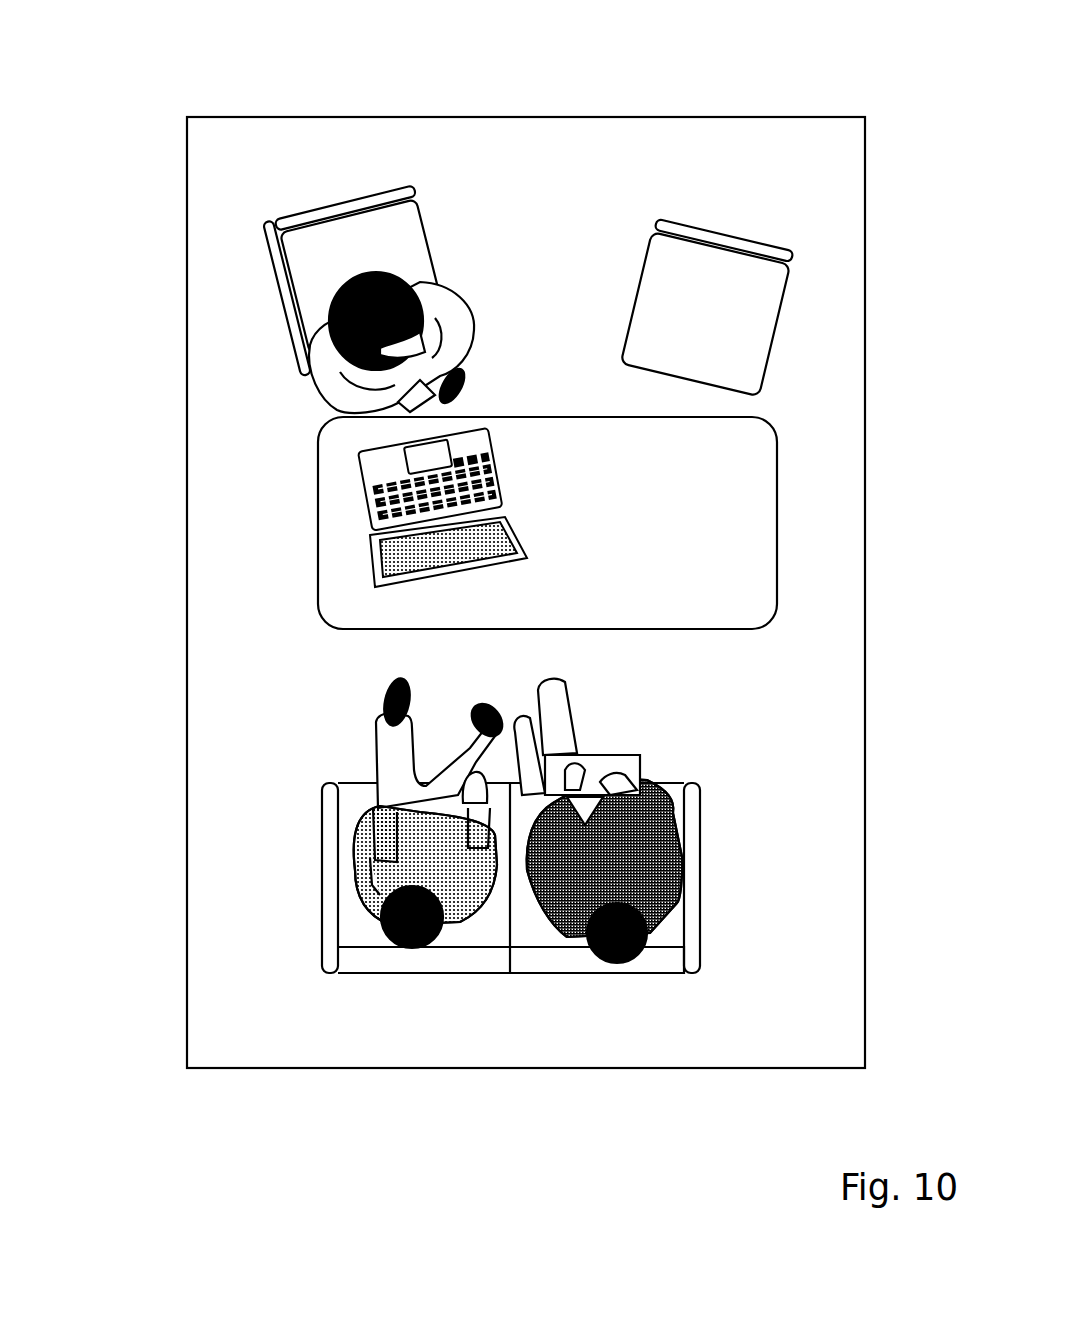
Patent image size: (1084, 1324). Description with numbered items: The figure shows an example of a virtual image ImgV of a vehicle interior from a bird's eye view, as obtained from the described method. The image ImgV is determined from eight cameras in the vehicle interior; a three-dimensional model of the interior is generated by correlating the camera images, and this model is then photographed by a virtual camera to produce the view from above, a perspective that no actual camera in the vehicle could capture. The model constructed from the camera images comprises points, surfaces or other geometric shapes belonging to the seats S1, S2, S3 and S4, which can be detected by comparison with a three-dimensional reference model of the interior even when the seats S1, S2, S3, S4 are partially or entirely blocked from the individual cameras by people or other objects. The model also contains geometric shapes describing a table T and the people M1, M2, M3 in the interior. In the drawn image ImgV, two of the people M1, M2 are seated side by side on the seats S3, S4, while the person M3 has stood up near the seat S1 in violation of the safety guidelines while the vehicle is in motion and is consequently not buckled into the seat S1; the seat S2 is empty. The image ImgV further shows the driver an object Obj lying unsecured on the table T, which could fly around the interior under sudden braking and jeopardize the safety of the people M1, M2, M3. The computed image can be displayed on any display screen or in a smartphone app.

The virtual image ImgV is at (505, 117).
The seat S1 is at (345, 198).
The seat S2 is at (733, 220).
The seat S3 is at (471, 960).
The seat S4 is at (568, 962).
The person M1 is at (365, 900).
The person M2 is at (550, 917).
The person M3 is at (335, 382).
The table T is at (325, 477).
The object Obj is at (373, 580).